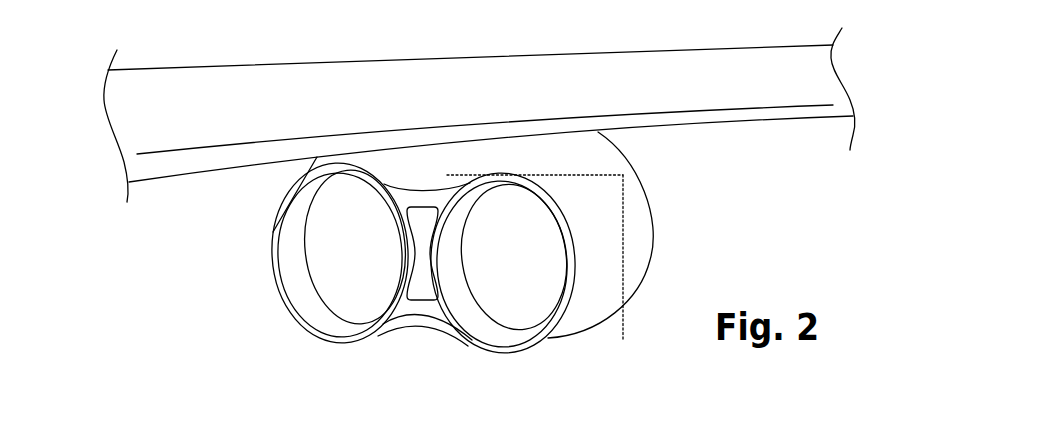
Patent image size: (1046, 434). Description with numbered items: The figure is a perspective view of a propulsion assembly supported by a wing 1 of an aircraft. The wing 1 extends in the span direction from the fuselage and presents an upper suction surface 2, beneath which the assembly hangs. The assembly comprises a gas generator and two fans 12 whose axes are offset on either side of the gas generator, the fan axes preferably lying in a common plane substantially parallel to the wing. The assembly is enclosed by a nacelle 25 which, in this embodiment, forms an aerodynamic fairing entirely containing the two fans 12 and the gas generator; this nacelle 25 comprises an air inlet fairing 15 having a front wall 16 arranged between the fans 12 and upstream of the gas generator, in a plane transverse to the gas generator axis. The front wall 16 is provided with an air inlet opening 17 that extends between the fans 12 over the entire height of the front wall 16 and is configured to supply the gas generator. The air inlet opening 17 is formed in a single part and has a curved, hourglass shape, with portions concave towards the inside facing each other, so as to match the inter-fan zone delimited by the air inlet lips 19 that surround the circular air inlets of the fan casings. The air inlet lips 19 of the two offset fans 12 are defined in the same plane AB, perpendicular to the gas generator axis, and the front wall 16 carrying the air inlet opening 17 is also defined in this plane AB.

The propulsion wing 1 is at (183, 96).
The upper suction surface 2 is at (690, 54).
The fans 12 is at (347, 268).
The air inlet fairing 15 is at (517, 157).
The front wall 16 is at (426, 319).
The air inlet opening 17 is at (423, 220).
The air inlet lips 19 is at (567, 320).
The nacelle 25 is at (575, 153).
The plane AB is at (603, 178).